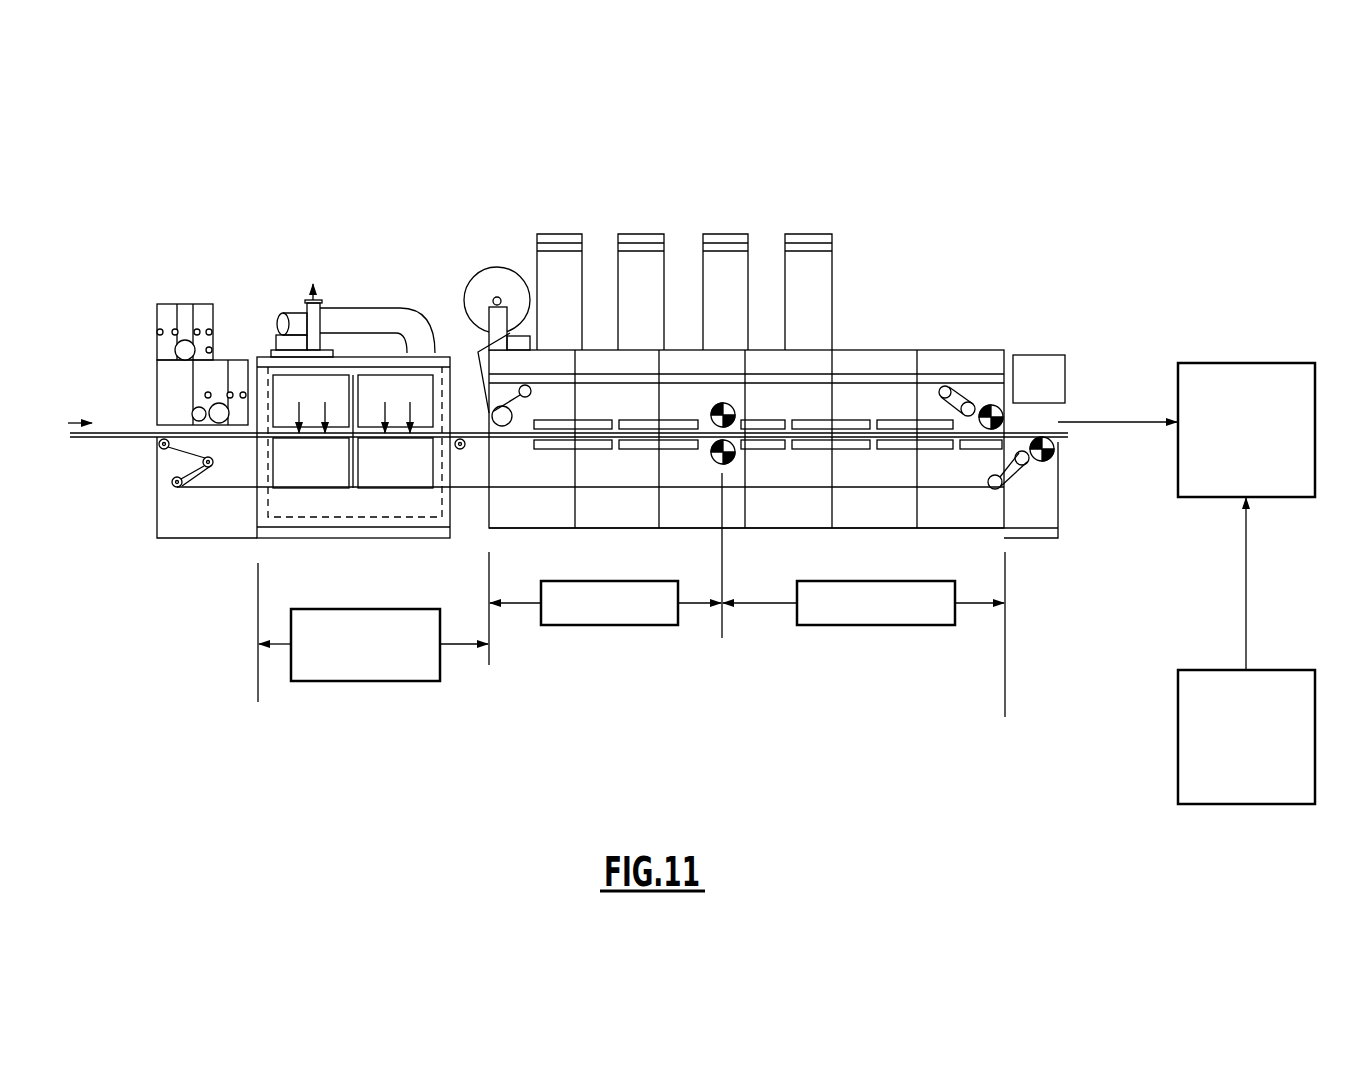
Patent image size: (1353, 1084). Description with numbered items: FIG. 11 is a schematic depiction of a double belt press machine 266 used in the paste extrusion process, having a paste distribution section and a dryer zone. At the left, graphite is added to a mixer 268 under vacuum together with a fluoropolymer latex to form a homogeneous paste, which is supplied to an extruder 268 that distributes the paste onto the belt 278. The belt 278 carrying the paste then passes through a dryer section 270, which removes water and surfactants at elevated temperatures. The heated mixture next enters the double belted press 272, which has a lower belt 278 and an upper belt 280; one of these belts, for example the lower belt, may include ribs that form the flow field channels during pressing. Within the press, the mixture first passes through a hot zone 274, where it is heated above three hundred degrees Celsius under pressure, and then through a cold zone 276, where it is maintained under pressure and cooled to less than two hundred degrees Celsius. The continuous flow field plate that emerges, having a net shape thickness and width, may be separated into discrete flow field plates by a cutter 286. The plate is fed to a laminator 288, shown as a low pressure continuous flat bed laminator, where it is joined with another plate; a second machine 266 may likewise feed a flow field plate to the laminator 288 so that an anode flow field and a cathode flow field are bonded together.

The double belt press machine 266 is at (1178, 753).
The mixer / extruder (paste deposition section) 268 is at (110, 723).
The dryer section 270 is at (473, 723).
The double belted press 272 is at (792, 478).
The hot zone 274 is at (487, 677).
The cold zone 276 is at (727, 677).
The lower belt 278 is at (968, 487).
The upper belt 280 is at (860, 383).
The cutter 286 is at (1066, 355).
The laminator 288 is at (1277, 360).